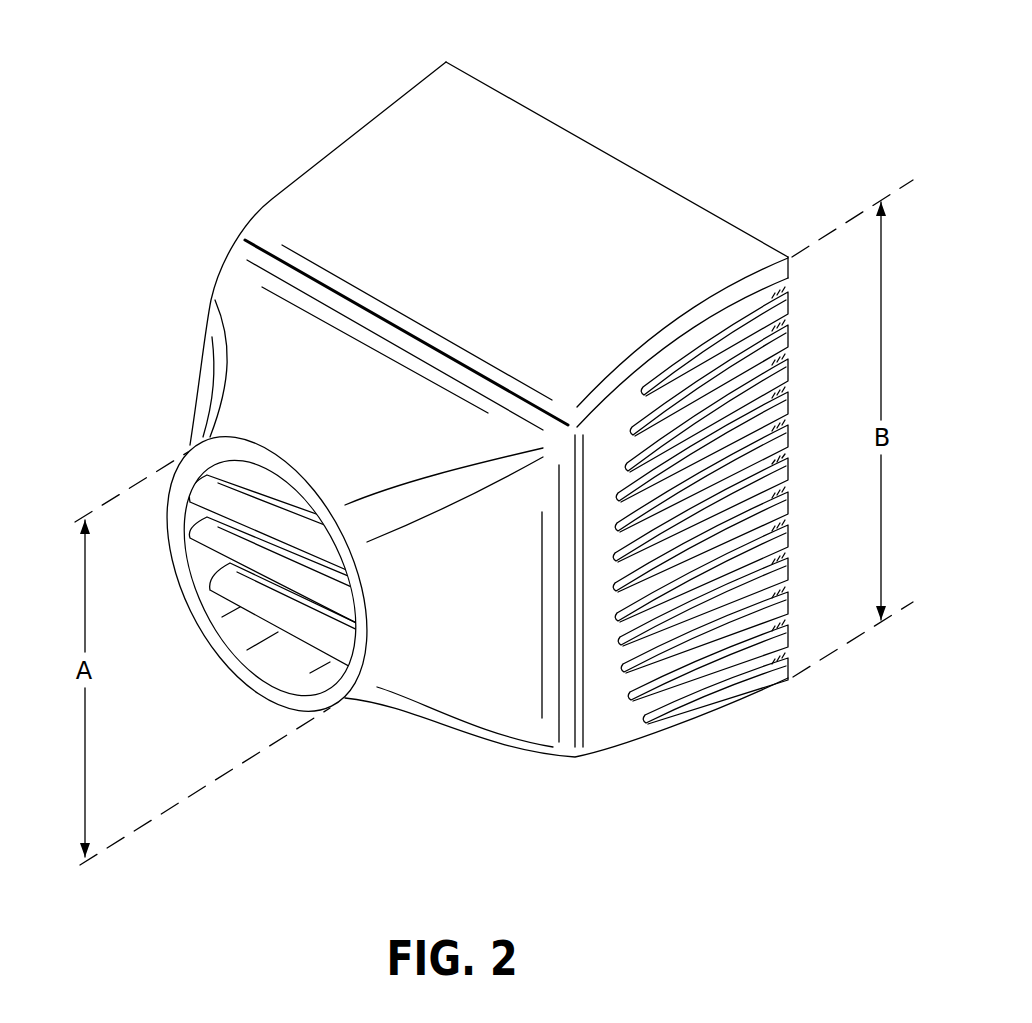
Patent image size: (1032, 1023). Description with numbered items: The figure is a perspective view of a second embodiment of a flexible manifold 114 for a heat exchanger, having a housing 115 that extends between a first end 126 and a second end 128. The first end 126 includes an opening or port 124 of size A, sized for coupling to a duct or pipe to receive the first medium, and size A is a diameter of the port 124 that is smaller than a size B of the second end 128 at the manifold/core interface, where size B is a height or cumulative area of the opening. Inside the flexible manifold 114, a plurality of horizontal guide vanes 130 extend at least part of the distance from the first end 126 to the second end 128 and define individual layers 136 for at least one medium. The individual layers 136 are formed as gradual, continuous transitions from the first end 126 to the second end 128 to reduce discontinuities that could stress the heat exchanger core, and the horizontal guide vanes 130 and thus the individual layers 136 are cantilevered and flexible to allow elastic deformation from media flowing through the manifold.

The flexible manifold 114 is at (716, 100).
The housing 115 is at (512, 234).
The port 124 is at (193, 618).
The first end 126 is at (166, 417).
The second end 128 is at (818, 386).
The horizontal guide vanes 130 is at (290, 578).
The individual layers 136 is at (323, 613).